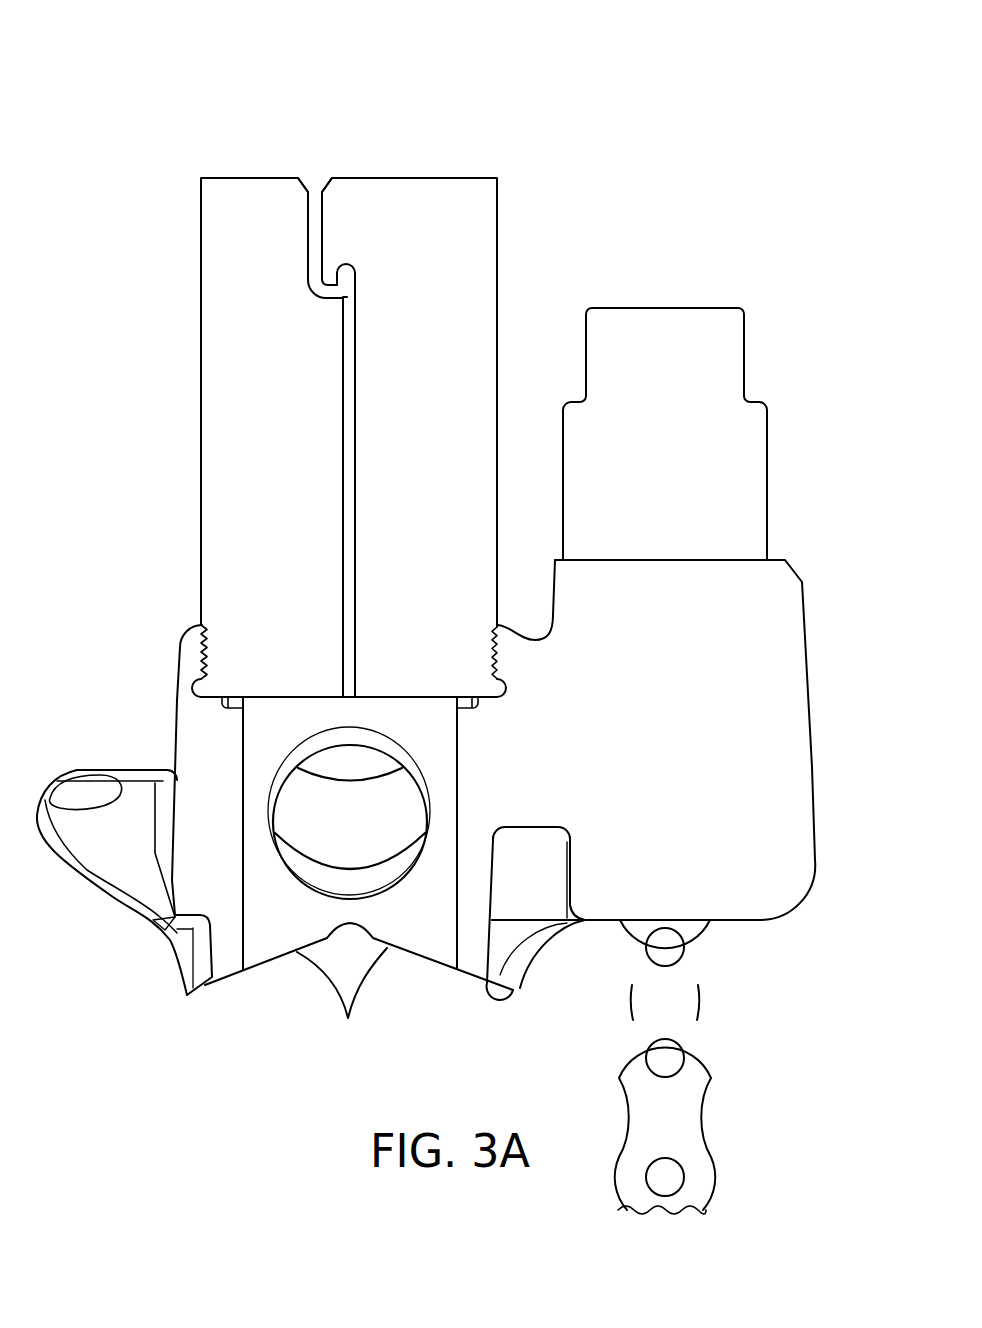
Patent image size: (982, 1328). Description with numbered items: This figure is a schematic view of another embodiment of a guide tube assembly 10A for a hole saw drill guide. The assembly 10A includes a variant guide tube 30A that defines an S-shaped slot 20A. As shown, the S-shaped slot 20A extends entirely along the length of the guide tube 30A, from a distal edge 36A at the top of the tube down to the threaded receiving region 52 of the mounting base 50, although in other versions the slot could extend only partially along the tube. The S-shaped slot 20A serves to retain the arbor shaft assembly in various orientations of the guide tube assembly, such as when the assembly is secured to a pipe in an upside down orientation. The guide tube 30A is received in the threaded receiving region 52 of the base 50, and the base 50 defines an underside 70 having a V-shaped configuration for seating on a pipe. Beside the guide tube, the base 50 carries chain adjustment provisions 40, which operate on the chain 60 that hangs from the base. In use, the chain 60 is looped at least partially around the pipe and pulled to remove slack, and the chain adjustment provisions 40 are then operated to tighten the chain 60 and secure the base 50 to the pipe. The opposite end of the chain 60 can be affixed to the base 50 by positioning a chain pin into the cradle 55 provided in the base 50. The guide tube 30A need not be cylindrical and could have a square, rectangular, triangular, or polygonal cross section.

The guide tube assembly 10A is at (113, 93).
The S-shaped slot 20A is at (348, 432).
The guide tube 30A is at (232, 340).
The distal edge 36A is at (258, 178).
The chain adjustment provisions 40 is at (750, 453).
The mounting base 50 is at (797, 780).
The threaded receiving region 52 is at (202, 653).
The cradle 55 is at (77, 797).
The chain 60 is at (687, 1113).
The underside 70 is at (342, 1000).